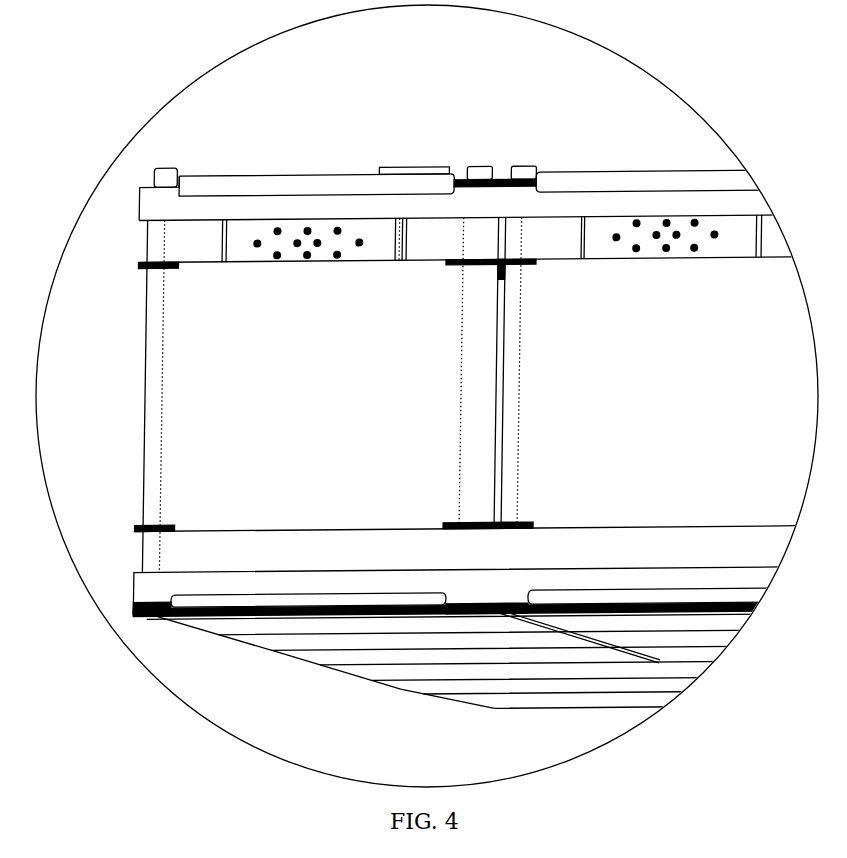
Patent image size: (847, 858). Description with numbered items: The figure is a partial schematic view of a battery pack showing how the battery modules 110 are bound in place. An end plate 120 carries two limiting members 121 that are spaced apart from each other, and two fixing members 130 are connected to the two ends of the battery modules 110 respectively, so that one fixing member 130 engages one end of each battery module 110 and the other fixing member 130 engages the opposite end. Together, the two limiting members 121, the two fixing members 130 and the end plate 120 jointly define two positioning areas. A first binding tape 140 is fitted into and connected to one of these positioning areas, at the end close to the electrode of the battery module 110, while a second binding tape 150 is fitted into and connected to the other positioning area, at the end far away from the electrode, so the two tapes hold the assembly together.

The battery module 110 is at (433, 662).
The end plate 120 is at (173, 412).
The limiting member 121 is at (141, 270).
The fixing member 130 is at (253, 213).
The first binding tape 140 is at (155, 247).
The second binding tape 150 is at (172, 545).